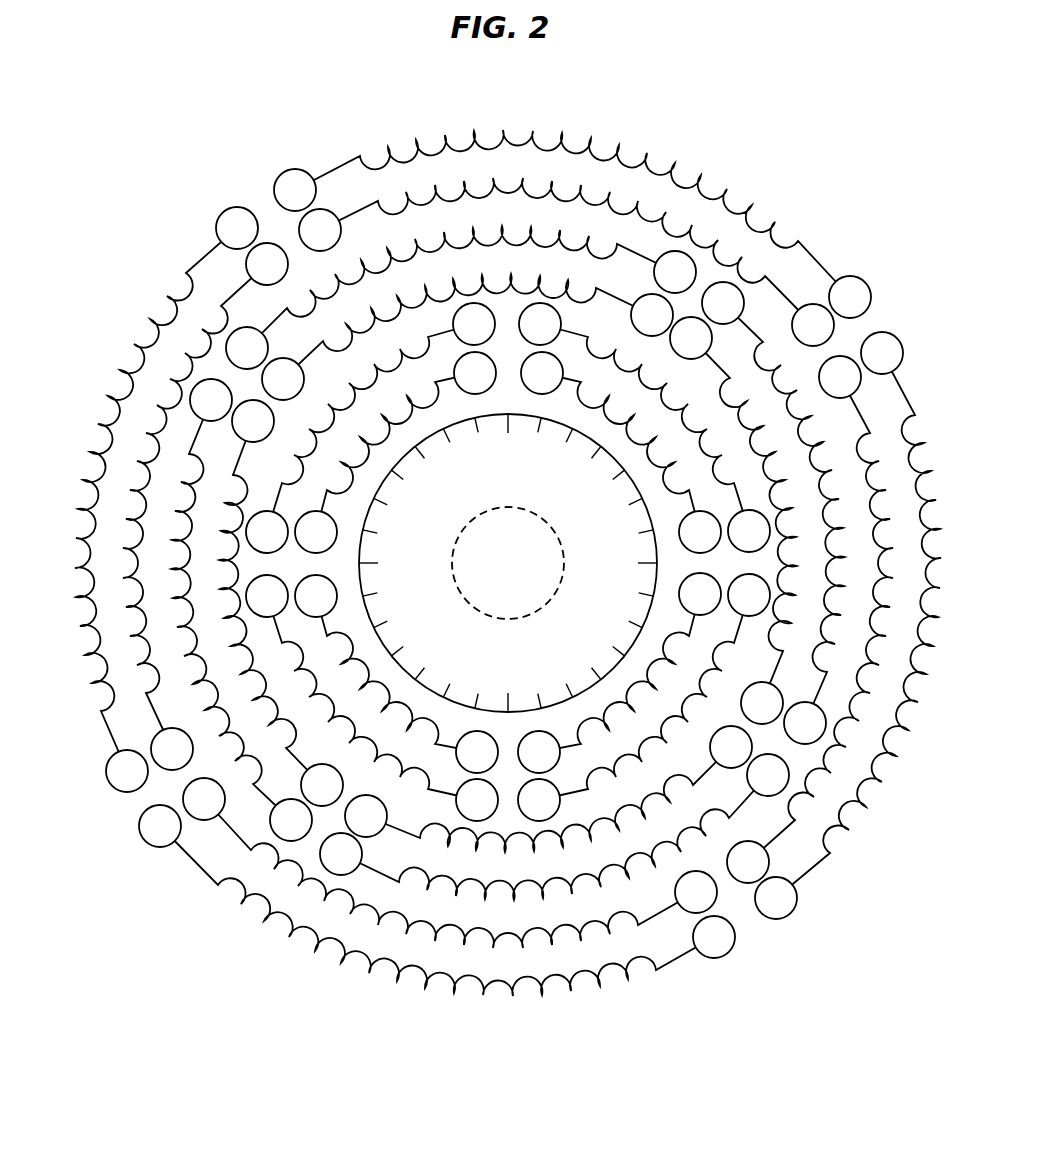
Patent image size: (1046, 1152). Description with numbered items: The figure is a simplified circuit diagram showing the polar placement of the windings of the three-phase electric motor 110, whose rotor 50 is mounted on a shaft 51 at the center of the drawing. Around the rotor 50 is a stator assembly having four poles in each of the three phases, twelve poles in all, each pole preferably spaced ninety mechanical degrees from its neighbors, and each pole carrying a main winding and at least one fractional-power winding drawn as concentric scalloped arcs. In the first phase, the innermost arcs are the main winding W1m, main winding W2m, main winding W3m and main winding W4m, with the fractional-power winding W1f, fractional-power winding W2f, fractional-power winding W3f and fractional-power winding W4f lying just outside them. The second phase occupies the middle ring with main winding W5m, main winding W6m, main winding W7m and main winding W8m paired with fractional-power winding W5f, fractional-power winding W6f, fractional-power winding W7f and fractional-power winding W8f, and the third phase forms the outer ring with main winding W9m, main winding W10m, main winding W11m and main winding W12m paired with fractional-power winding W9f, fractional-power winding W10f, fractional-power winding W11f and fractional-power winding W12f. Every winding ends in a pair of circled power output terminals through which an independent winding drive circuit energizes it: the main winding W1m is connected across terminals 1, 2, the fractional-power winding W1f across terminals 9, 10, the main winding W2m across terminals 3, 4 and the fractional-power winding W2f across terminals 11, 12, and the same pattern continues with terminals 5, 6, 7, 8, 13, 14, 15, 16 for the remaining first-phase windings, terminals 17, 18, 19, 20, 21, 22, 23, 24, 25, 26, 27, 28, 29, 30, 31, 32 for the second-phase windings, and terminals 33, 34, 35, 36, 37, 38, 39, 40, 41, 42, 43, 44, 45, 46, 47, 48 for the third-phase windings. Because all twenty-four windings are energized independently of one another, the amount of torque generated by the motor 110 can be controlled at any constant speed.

The power output terminal 1 is at (542, 373).
The power output terminal 2 is at (700, 532).
The power output terminal 3 is at (700, 594).
The power output terminal 4 is at (539, 752).
The power output terminal 5 is at (477, 752).
The power output terminal 6 is at (316, 596).
The power output terminal 7 is at (316, 532).
The power output terminal 8 is at (475, 373).
The power output terminal 9 is at (540, 324).
The power output terminal 10 is at (749, 531).
The power output terminal 11 is at (749, 595).
The power output terminal 12 is at (539, 800).
The power output terminal 13 is at (477, 800).
The power output terminal 14 is at (267, 596).
The power output terminal 15 is at (267, 532).
The power output terminal 16 is at (474, 324).
The power output terminal 17 is at (691, 338).
The power output terminal 18 is at (762, 703).
The power output terminal 19 is at (731, 747).
The power output terminal 20 is at (366, 816).
The power output terminal 21 is at (322, 785).
The power output terminal 22 is at (253, 421).
The power output terminal 23 is at (283, 379).
The power output terminal 24 is at (652, 315).
The power output terminal 25 is at (723, 303).
The power output terminal 26 is at (805, 723).
The power output terminal 27 is at (768, 775).
The power output terminal 28 is at (341, 854).
The power output terminal 29 is at (291, 820).
The power output terminal 30 is at (211, 400).
The power output terminal 31 is at (247, 348).
The power output terminal 32 is at (675, 272).
The power output terminal 33 is at (840, 377).
The power output terminal 34 is at (748, 862).
The power output terminal 35 is at (696, 892).
The power output terminal 36 is at (204, 799).
The power output terminal 37 is at (172, 749).
The power output terminal 38 is at (267, 264).
The power output terminal 39 is at (320, 230).
The power output terminal 40 is at (813, 325).
The power output terminal 41 is at (882, 353).
The power output terminal 42 is at (776, 898).
The power output terminal 43 is at (714, 937).
The power output terminal 44 is at (160, 826).
The power output terminal 45 is at (127, 771).
The power output terminal 46 is at (237, 228).
The power output terminal 47 is at (295, 190).
The power output terminal 48 is at (850, 297).
The rotor 50 is at (508, 563).
The shaft 51 is at (508, 563).
The electric motor 110 is at (326, 170).
The main winding W1m is at (621, 452).
The fractional-power winding W1f is at (644, 427).
The main winding W2m is at (619, 673).
The fractional-power winding W2f is at (644, 697).
The main winding W3m is at (396, 674).
The fractional-power winding W3f is at (372, 698).
The main winding W4m is at (395, 452).
The fractional-power winding W4f is at (370, 428).
The main winding W5m is at (758, 520).
The fractional-power winding W5f is at (796, 513).
The main winding W6m is at (548, 813).
The fractional-power winding W6f is at (554, 850).
The main winding W7m is at (256, 603).
The fractional-power winding W7f is at (216, 610).
The main winding W8m is at (467, 314).
The fractional-power winding W8f is at (461, 278).
The main winding W9m is at (830, 619).
The fractional-power winding W9f is at (868, 625).
The main winding W10m is at (450, 883).
The fractional-power winding W10f is at (437, 920).
The main winding W11m is at (183, 506).
The fractional-power winding W11f is at (143, 499).
The main winding W12m is at (566, 246).
The fractional-power winding W12f is at (572, 208).